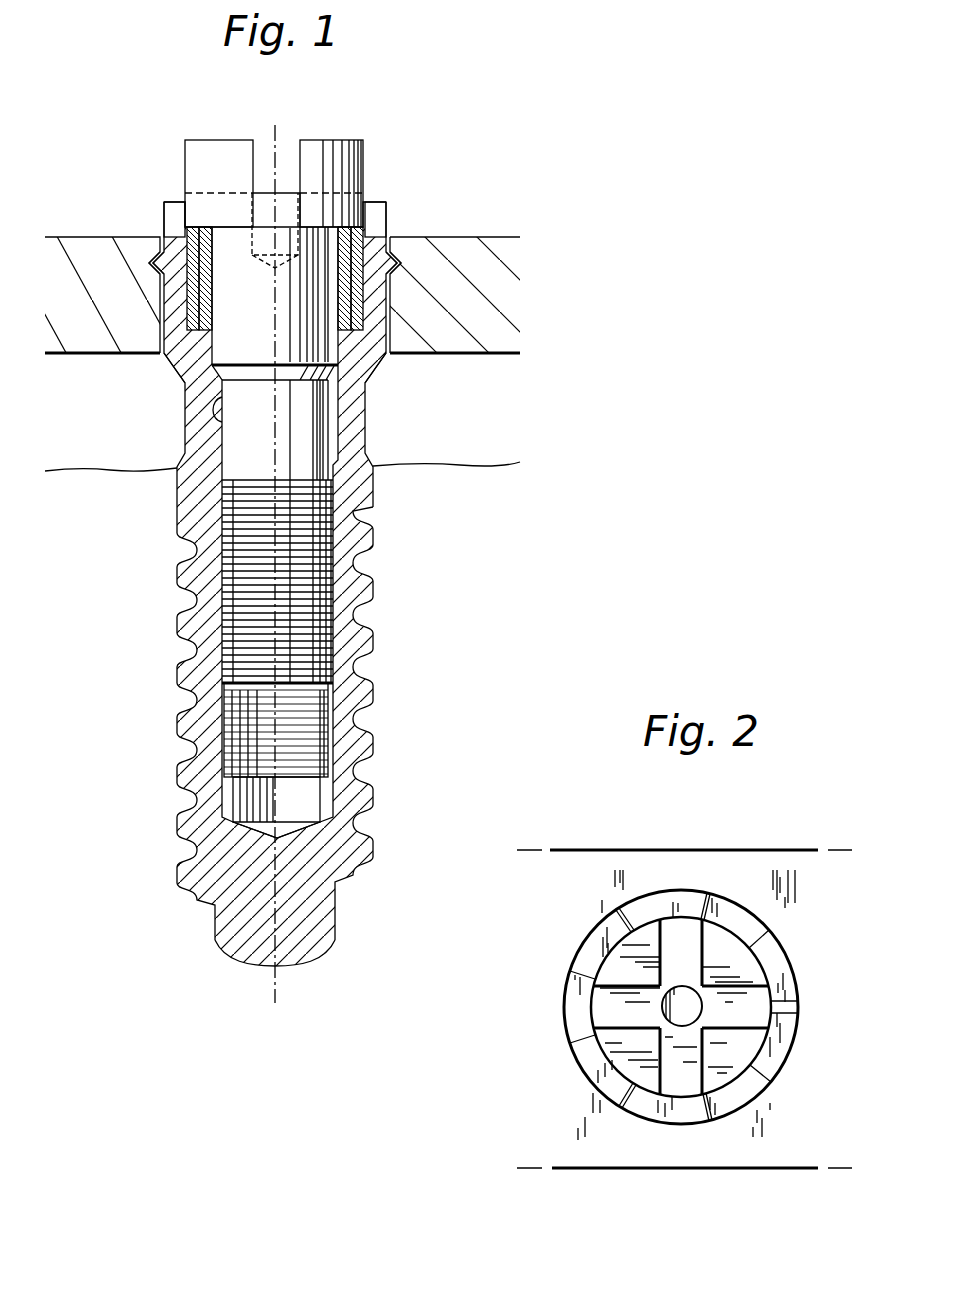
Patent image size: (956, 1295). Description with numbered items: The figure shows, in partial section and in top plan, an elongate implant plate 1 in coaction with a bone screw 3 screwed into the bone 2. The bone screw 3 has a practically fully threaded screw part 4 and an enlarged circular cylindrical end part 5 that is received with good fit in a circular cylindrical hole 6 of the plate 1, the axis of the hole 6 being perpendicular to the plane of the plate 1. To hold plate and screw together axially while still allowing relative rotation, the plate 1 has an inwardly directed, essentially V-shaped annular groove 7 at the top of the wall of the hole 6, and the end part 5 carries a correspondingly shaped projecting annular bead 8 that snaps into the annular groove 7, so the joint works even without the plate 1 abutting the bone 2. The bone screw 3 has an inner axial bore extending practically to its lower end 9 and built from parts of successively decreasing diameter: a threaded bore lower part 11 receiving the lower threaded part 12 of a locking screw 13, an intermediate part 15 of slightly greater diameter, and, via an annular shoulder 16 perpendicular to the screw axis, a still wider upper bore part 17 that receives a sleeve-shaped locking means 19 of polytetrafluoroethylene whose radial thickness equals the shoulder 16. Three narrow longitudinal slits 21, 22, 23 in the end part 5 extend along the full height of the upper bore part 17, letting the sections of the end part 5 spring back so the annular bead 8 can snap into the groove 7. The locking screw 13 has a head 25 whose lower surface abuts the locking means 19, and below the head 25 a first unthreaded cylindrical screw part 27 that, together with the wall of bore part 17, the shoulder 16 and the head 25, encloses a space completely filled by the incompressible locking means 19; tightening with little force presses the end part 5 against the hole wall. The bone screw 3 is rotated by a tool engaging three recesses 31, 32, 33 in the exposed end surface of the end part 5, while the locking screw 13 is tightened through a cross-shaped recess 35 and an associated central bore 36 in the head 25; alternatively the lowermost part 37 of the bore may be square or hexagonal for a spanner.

In FIG. 1, the implant plate 1 is at (78, 235).
In FIG. 2, the implant plate 1 is at (642, 850).
In FIG. 1, the bone 2 is at (78, 500).
In FIG. 1, the bone screw 3 is at (370, 432).
In FIG. 1, the screw part 4 is at (360, 550).
In FIG. 1, the end part 5 is at (173, 253).
In FIG. 1, the hole 6 is at (385, 352).
In FIG. 1, the annular groove 7 is at (427, 237).
In FIG. 1, the annular bead 8 is at (392, 250).
In FIG. 1, the lower end 9 is at (228, 930).
In FIG. 1, the bore lower part 11 is at (330, 622).
In FIG. 1, the lower threaded part 12 is at (298, 653).
In FIG. 1, the locking screw 13 is at (350, 138).
In FIG. 1, the intermediate part 15 is at (217, 410).
In FIG. 1, the annular shoulder 16 is at (187, 360).
In FIG. 1, the upper bore part 17 is at (187, 310).
In FIG. 1, the locking means 19 is at (197, 277).
In FIG. 1, the slit 21 is at (372, 207).
In FIG. 2, the slit 21 is at (798, 1005).
In FIG. 2, the slit 22 is at (630, 930).
In FIG. 2, the slit 23 is at (621, 1107).
In FIG. 1, the head 25 is at (222, 153).
In FIG. 1, the first unthreaded cylindrical screw part 27 is at (300, 338).
In FIG. 1, the recess 31 is at (175, 207).
In FIG. 2, the recess 31 is at (582, 1010).
In FIG. 2, the recess 32 is at (747, 1092).
In FIG. 2, the recess 33 is at (740, 917).
In FIG. 2, the recess 35 is at (680, 933).
In FIG. 2, the central bore 36 is at (683, 1017).
In FIG. 1, the lowermost part 37 is at (303, 802).